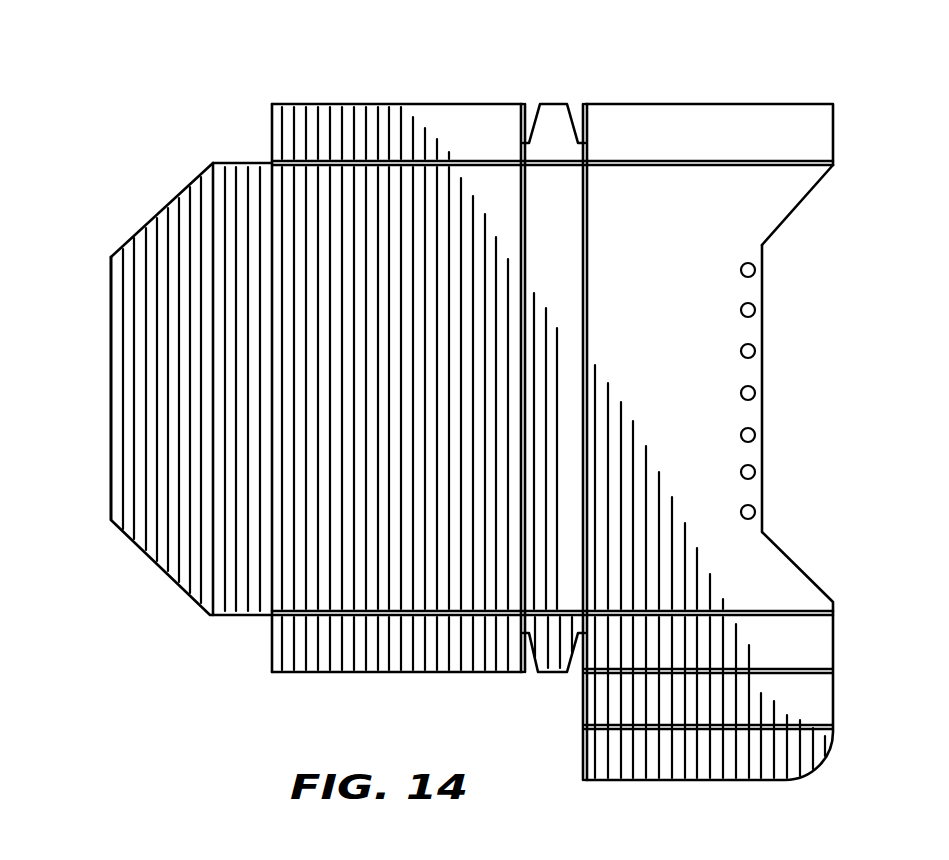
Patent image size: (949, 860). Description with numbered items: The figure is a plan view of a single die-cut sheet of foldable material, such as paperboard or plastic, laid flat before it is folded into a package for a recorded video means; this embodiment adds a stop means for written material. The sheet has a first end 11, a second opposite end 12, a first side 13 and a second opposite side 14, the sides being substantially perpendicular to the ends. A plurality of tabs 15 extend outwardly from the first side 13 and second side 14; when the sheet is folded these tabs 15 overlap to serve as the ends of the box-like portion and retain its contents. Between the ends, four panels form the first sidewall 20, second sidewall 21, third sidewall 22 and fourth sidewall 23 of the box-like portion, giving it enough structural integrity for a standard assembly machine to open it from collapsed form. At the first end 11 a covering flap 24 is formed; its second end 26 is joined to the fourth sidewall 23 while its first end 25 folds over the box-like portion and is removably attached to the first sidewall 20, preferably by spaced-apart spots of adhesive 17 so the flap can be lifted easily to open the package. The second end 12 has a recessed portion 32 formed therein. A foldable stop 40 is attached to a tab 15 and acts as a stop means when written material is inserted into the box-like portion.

The first end 11 is at (112, 459).
The second opposite end 12 is at (842, 606).
The first side 13 is at (458, 165).
The second opposite side 14 is at (320, 618).
The tabs 15 is at (332, 133).
The spots of adhesive 17 is at (757, 472).
The first sidewall 20 is at (680, 428).
The second sidewall 21 is at (558, 193).
The third sidewall 22 is at (362, 210).
The fourth sidewall 23 is at (242, 192).
The covering flap 24 is at (152, 280).
The first end of covering flap 25 is at (110, 348).
The second end of covering flap 26 is at (208, 203).
The recessed portion 32 is at (795, 228).
The foldable stop 40 is at (727, 753).